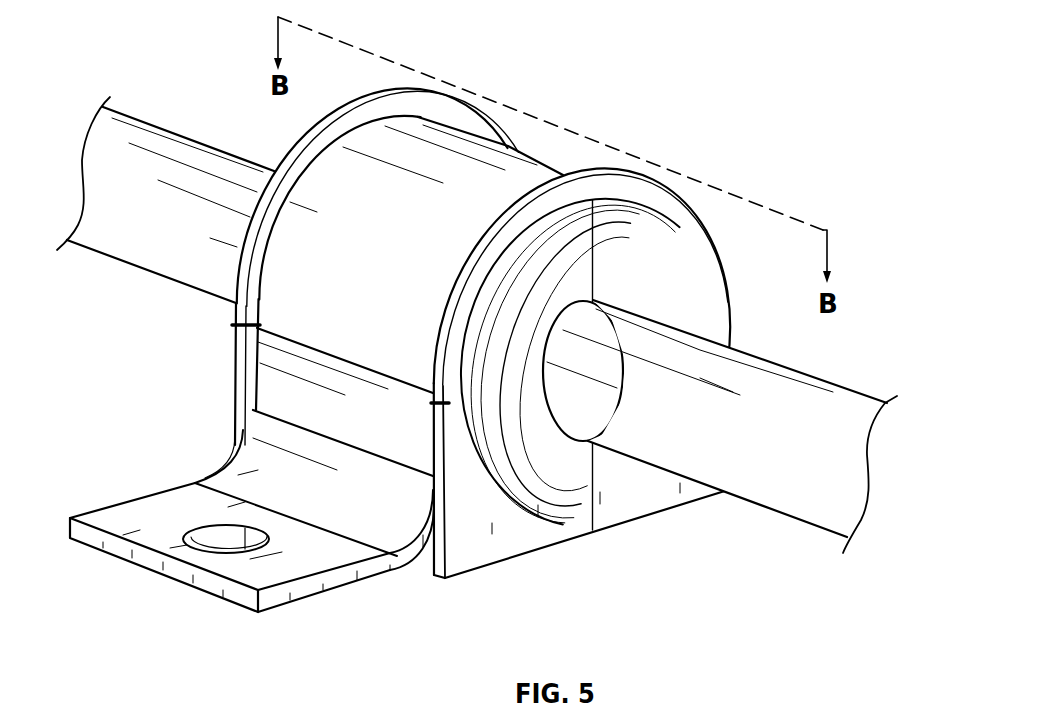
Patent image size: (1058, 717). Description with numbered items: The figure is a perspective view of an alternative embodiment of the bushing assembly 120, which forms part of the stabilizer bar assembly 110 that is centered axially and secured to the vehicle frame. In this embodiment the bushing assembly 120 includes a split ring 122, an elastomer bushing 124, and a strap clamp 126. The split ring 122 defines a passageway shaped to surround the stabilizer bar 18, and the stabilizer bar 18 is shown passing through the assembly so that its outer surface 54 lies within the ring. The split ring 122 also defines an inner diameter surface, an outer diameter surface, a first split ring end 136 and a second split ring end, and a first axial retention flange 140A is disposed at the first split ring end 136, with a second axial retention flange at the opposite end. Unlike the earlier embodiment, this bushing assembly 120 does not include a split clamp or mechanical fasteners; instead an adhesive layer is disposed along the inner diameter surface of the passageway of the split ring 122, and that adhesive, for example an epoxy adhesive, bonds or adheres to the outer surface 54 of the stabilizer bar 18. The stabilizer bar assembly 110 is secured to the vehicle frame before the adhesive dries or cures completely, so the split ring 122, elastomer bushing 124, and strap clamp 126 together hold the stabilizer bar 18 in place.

The stabilizer bar assembly 110 is at (473, 331).
The bushing assembly 120 is at (471, 366).
The split ring 122 is at (600, 509).
The elastomer bushing 124 is at (462, 582).
The strap clamp 126 is at (133, 585).
The first split ring end 136 is at (712, 294).
The first axial retention flange 140A is at (702, 273).
The stabilizer bar 18 is at (477, 325).
The outer surface 54 is at (841, 465).